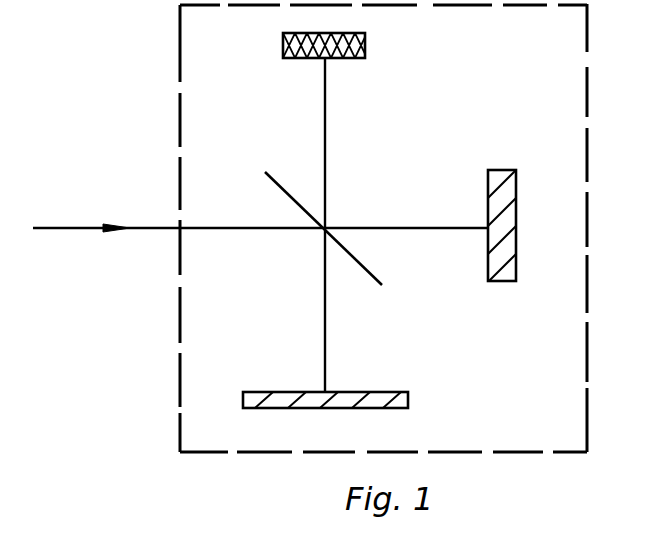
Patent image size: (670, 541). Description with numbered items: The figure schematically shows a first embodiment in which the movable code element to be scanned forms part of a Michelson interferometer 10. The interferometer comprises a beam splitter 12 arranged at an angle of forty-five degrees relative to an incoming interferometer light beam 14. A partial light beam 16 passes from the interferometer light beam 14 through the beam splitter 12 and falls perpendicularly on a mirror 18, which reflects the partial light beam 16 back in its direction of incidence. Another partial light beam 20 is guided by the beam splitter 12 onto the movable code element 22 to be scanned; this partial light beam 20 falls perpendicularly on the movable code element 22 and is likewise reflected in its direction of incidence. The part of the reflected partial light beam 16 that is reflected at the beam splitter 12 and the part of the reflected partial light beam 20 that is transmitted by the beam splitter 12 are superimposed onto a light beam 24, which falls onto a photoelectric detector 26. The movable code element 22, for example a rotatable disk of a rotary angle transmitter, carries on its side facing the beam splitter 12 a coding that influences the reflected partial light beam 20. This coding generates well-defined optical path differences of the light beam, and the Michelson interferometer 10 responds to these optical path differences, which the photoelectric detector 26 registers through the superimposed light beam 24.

The Michelson interferometer 10 is at (588, 302).
The beam splitter 12 is at (367, 266).
The interferometer light beam 14 is at (140, 232).
The partial light beam 16 is at (393, 222).
The mirror 18 is at (499, 272).
The partial light beam 20 is at (327, 338).
The movable code element 22 is at (270, 410).
The light beam 24 is at (326, 163).
The photoelectric detector 26 is at (337, 34).